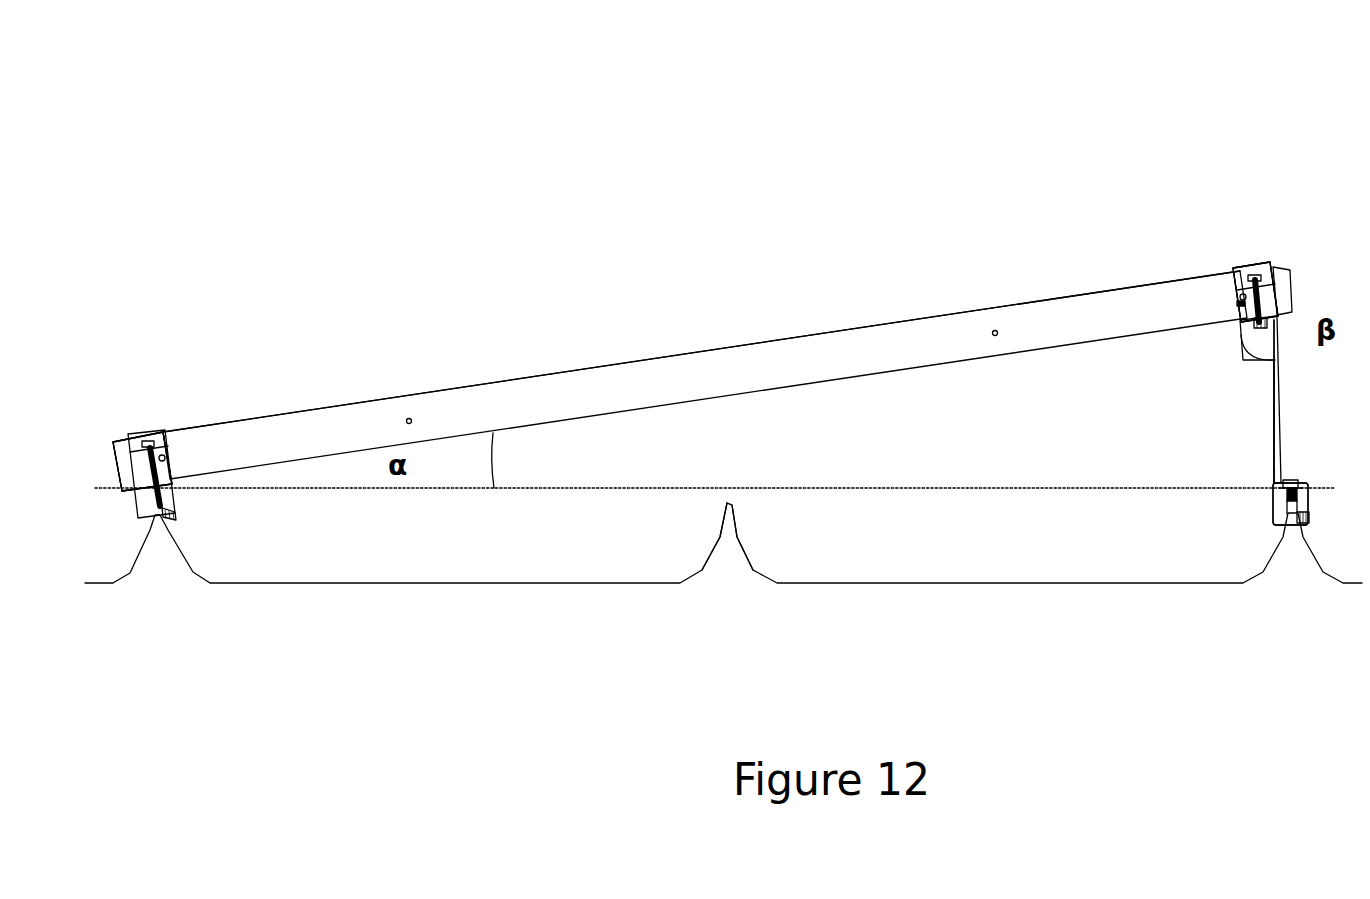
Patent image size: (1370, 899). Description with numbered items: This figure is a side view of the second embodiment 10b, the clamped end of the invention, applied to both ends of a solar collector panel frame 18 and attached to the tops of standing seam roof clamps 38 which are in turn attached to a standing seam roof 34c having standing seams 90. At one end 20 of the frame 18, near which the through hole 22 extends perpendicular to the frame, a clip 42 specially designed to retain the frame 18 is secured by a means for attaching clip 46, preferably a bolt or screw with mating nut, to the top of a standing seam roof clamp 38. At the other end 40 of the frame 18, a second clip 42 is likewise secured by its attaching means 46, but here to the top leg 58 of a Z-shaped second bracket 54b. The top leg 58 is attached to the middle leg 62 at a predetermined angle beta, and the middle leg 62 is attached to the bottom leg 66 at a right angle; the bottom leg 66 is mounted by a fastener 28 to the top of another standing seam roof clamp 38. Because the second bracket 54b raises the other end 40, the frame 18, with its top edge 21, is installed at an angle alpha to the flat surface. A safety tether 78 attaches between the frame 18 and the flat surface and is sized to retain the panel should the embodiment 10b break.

The second embodiment 10b is at (141, 416).
The frame 18 is at (963, 327).
The one end of frame 20 is at (115, 467).
The top edge of frame 21 is at (775, 338).
The through hole 22 is at (165, 466).
The fastener 28 is at (1285, 480).
The standing seam roof 34c is at (905, 585).
The standing seam roof clamp 38 is at (170, 498).
The other end of frame 40 is at (1279, 268).
The clip 42 is at (153, 425).
The means for attaching clip 46 is at (157, 470).
The Z-shaped second bracket 54b is at (1250, 395).
The top leg of second bracket 58 is at (1262, 320).
The middle leg of second bracket 62 is at (1277, 403).
The bottom leg of second bracket 66 is at (1295, 480).
The safety tether 78 is at (1238, 304).
The standing seam 90 is at (738, 560).